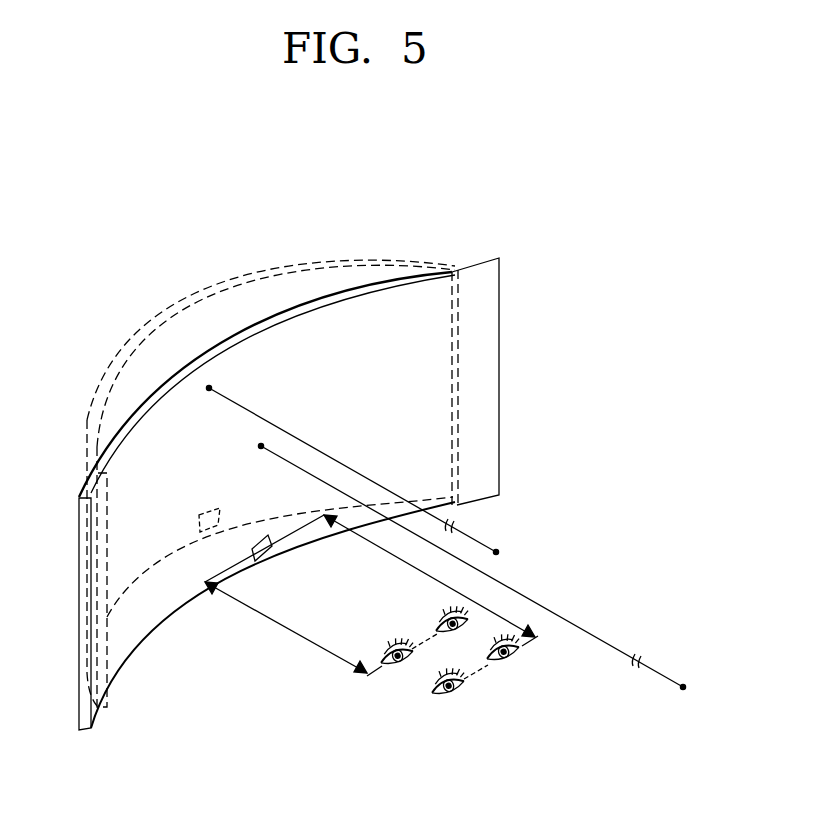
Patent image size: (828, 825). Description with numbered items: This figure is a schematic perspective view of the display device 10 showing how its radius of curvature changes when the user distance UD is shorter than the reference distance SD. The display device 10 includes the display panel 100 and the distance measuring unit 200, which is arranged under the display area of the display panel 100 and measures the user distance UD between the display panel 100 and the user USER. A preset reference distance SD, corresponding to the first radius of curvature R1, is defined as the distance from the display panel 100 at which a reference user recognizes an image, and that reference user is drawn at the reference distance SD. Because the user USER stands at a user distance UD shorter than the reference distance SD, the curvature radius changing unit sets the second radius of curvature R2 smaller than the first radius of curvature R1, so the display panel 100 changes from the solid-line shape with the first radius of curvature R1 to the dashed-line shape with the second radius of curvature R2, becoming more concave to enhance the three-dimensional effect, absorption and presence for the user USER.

The display device 10 is at (565, 222).
The display panel 100 is at (499, 380).
The distance measuring unit 200 is at (271, 556).
The first radius of curvature R1 is at (473, 566).
The second radius of curvature R2 is at (354, 469).
The reference distance SD is at (371, 580).
The user distance UD is at (293, 629).
The user USER is at (397, 668).